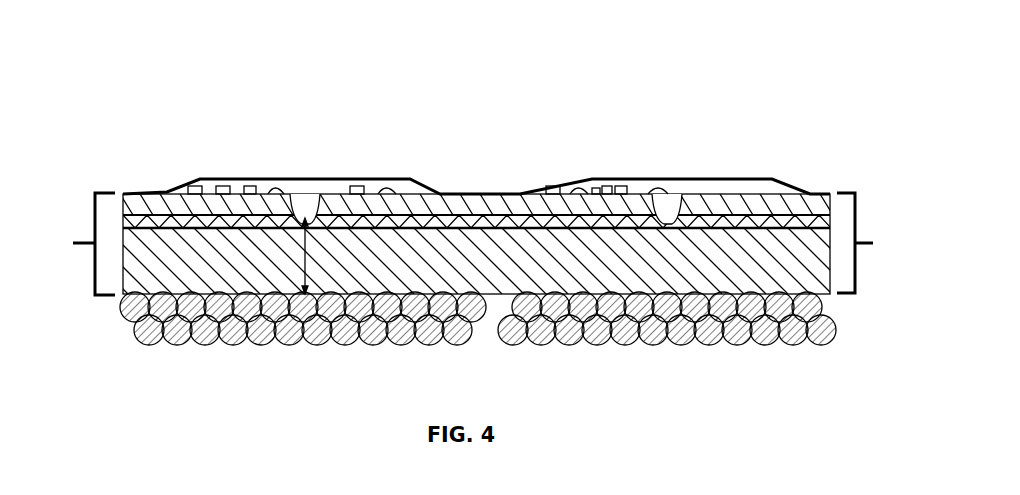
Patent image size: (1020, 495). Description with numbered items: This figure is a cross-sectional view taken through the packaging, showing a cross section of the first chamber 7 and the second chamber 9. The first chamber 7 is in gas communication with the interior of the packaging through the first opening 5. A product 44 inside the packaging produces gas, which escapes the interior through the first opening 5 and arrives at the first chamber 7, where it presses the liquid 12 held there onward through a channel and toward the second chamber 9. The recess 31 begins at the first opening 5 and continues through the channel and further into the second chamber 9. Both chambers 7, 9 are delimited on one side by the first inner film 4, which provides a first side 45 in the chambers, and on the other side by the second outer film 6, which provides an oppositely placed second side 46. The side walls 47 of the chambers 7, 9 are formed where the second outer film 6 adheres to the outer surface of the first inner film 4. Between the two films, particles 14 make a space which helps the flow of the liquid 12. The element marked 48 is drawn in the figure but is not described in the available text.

The first inner film 4 is at (471, 244).
The first opening 5 is at (304, 212).
The second outer film 6 is at (388, 185).
The first chamber 7 is at (250, 185).
The second chamber 9 is at (597, 186).
The liquid 12 is at (226, 185).
The particles 14 is at (198, 184).
The recess 31 is at (317, 221).
The product 44 is at (138, 330).
The first side 45 is at (357, 185).
The second side 46 is at (662, 184).
The side walls 47 is at (168, 190).
The component 48 is at (276, 186).